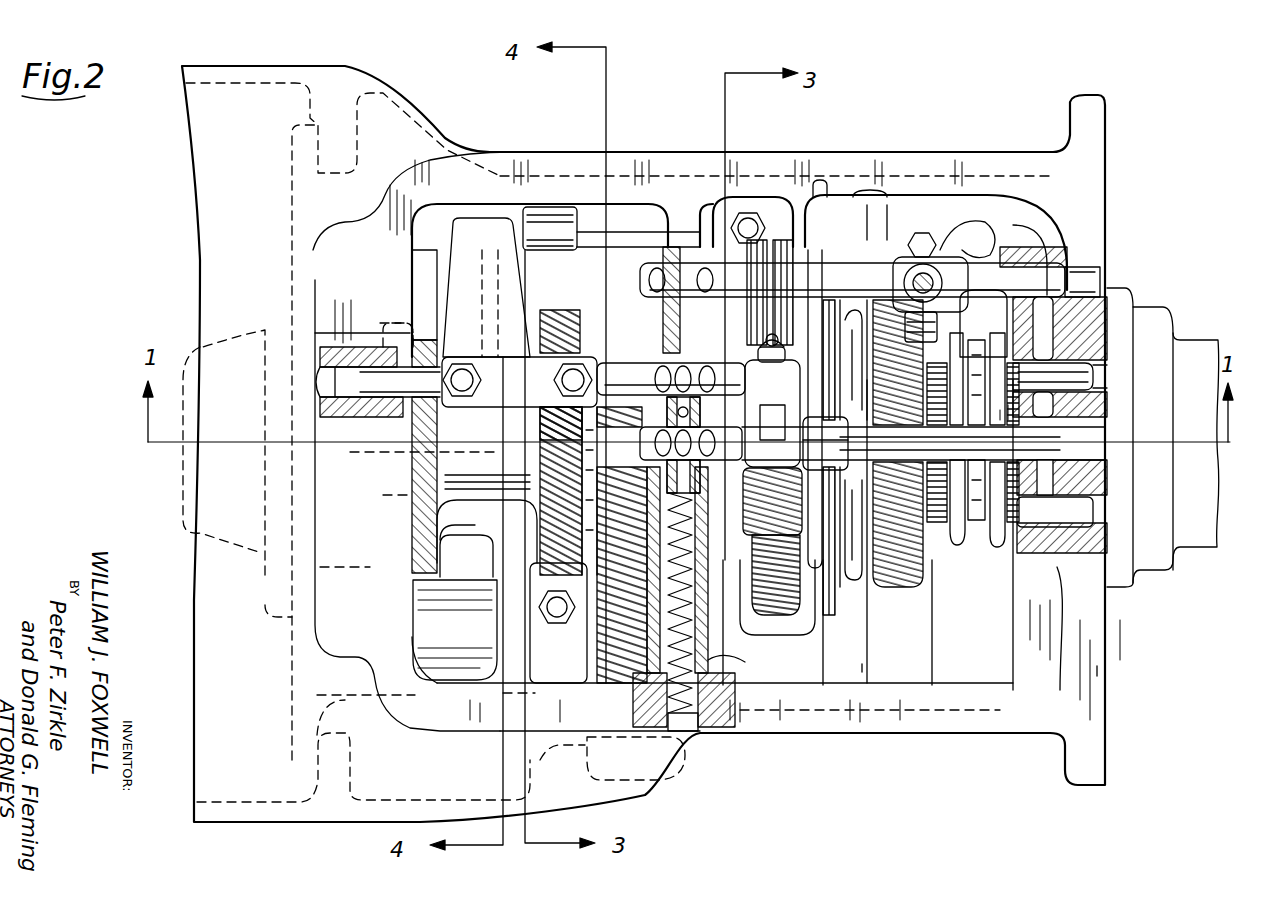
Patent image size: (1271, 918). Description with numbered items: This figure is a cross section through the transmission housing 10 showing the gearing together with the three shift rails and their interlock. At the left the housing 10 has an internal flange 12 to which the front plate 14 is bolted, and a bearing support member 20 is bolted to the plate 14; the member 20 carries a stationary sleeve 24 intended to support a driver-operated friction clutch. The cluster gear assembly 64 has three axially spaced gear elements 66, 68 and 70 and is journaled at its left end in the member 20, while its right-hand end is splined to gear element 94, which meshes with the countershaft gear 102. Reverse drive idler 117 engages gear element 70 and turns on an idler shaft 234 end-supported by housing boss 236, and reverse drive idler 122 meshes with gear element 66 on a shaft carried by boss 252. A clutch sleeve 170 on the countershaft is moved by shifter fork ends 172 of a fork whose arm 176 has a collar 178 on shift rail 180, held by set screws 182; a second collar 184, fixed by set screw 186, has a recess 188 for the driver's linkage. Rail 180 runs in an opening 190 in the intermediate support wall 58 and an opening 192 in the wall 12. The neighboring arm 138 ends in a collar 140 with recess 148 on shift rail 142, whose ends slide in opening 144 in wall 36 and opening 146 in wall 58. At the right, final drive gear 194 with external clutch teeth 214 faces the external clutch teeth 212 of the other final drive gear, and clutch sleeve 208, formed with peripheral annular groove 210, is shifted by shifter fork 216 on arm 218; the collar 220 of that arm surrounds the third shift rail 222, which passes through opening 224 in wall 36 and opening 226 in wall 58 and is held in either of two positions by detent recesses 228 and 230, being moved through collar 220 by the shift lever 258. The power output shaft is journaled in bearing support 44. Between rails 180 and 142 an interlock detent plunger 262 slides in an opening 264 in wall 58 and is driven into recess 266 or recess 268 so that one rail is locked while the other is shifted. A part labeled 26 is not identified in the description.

The transmission housing 10 is at (235, 832).
The internal flange 12 is at (300, 740).
The front plate 14 is at (265, 590).
The bearing support member 20 is at (265, 330).
The stationary sleeve 24 is at (182, 480).
The housing partition wall 26 is at (862, 670).
The wall 36 is at (1097, 672).
The bearing support 44 is at (1193, 343).
The intermediate support wall 58 is at (708, 669).
The cluster gear assembly 64 is at (545, 472).
The gear element 66 is at (440, 478).
The gear element 68 is at (566, 548).
The gear element 70 is at (700, 548).
The gear element 94 is at (815, 575).
The countershaft gear 102 is at (776, 616).
The reverse drive idler 117 is at (625, 730).
The reverse drive idler 122 is at (408, 735).
The arm 138 is at (790, 315).
The collar 140 is at (851, 443).
The shift rail 142 is at (866, 466).
The opening 144 is at (1075, 482).
The opening 146 is at (697, 479).
The recess 148 is at (777, 455).
The clutch sleeve 170 is at (458, 528).
The shifter fork ends 172 is at (433, 453).
The arm 176 is at (458, 258).
The collar 178 is at (582, 375).
The shift rail 180 is at (375, 380).
The set screws 182 is at (462, 372).
The collar 184 is at (796, 366).
The set screw 186 is at (778, 346).
The recess 188 is at (826, 443).
The opening 190 is at (665, 330).
The opening 192 is at (405, 333).
The final drive gear 194 is at (880, 546).
The clutch sleeve 208 is at (952, 555).
The peripheral annular groove 210 is at (968, 540).
The external clutch teeth 212 is at (1003, 560).
The external clutch teeth 214 is at (937, 547).
The shifter fork 216 is at (1004, 517).
The arm 218 is at (990, 315).
The collar 220 is at (957, 250).
The third shift rail 222 is at (1050, 284).
The opening 224 is at (1030, 275).
The opening 226 is at (662, 275).
The detent recess 228 is at (658, 275).
The detent recess 230 is at (717, 280).
The idler shaft 234 is at (520, 624).
The housing boss 236 is at (535, 754).
The boss 252 is at (455, 592).
The shift lever 258 is at (922, 268).
The detent plunger 262 is at (772, 403).
The opening 264 is at (657, 410).
The recess 266 is at (668, 325).
The recess 268 is at (665, 432).